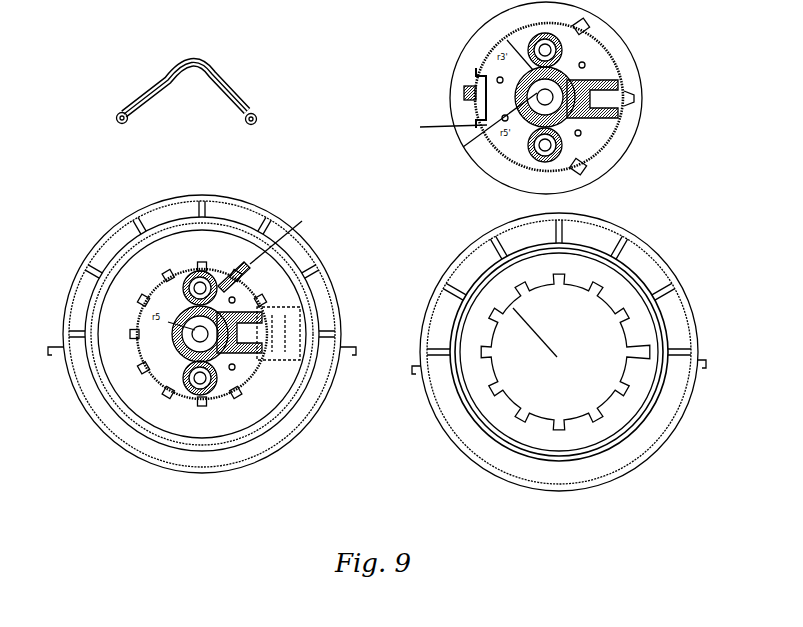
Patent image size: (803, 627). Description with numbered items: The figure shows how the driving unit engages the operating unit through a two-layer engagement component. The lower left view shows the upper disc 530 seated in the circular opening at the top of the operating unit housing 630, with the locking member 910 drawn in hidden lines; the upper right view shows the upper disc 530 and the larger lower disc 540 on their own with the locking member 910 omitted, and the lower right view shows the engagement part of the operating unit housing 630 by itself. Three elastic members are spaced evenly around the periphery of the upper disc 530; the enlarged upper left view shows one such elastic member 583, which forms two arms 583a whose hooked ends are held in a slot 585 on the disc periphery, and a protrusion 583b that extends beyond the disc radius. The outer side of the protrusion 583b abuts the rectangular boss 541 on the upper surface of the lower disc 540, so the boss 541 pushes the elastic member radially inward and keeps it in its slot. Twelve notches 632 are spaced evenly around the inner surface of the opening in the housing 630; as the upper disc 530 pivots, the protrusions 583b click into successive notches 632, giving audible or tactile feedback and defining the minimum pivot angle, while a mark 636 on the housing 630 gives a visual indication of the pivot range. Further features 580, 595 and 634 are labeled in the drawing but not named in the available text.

The upper disc 530 is at (505, 147).
The lower disc 540 is at (475, 52).
The boss 541 is at (466, 94).
The carrier body 580 is at (136, 308).
The spring clip 583 is at (248, 73).
The spring clip end loops 583a is at (242, 122).
The spring clip apex 583b is at (203, 64).
The roller 585 is at (215, 283).
The hub body 595 is at (480, 78).
The operating unit housing 630 is at (447, 393).
The notch 632 is at (482, 353).
The toothed gear 634 is at (537, 405).
The mark 636 is at (222, 203).
The locking member 910 is at (295, 320).